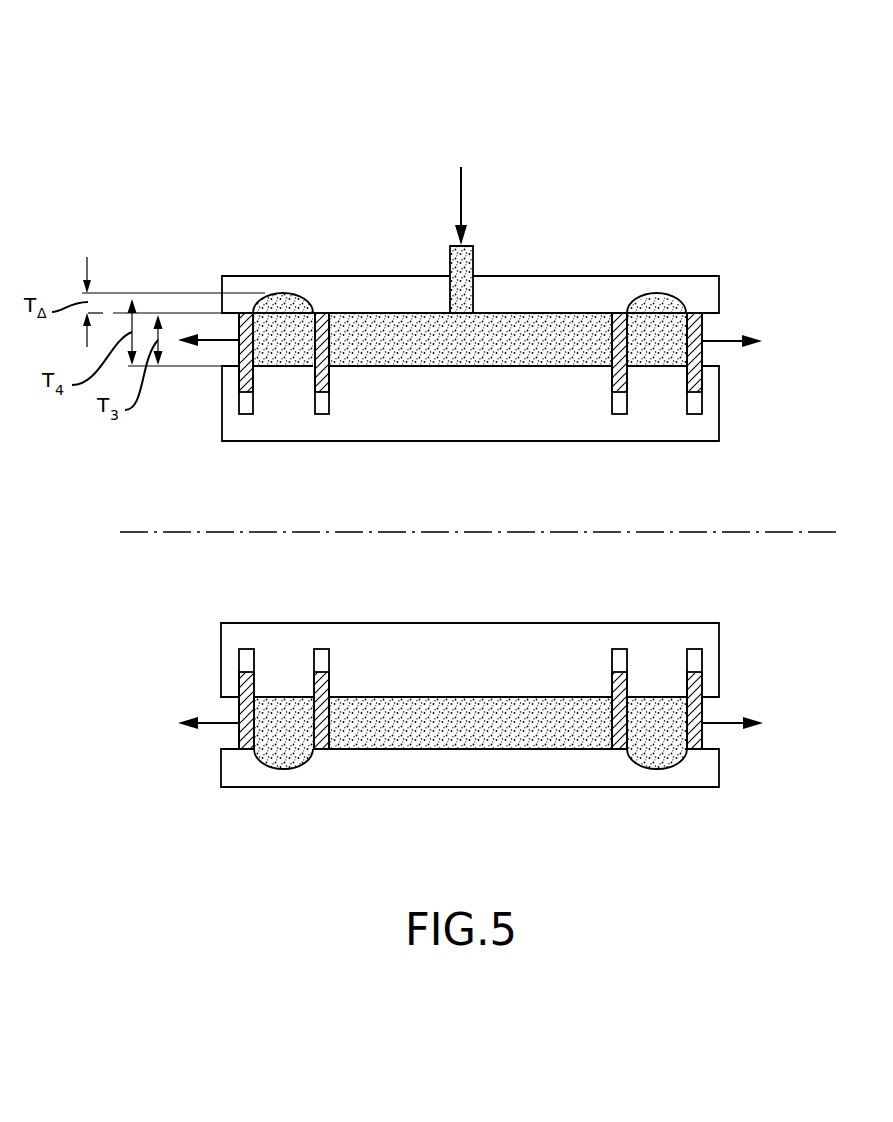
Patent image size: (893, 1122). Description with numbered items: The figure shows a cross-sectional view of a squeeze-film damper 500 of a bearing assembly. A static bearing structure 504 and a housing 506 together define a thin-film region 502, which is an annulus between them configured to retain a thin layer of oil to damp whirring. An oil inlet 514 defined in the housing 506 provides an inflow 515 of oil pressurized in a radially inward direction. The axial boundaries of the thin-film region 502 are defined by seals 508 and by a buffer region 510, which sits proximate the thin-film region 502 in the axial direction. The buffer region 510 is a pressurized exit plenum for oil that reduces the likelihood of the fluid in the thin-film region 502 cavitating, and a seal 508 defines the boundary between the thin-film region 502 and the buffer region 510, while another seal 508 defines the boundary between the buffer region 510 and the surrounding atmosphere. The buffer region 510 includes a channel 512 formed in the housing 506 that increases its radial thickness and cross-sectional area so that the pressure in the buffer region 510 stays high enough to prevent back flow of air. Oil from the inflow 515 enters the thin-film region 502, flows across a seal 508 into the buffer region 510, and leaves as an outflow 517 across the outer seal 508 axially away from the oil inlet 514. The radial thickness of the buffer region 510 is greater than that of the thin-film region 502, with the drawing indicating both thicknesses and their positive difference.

The squeeze-film damper 500 is at (208, 130).
The thin-film region 502 is at (502, 337).
The static bearing structure 504 is at (527, 425).
The housing 506 is at (352, 287).
The seal 508 is at (618, 380).
The buffer region 510 is at (670, 330).
The channel 512 is at (655, 302).
The oil inlet 514 is at (463, 262).
The inflow 515 is at (461, 182).
The outflow 517 is at (727, 338).